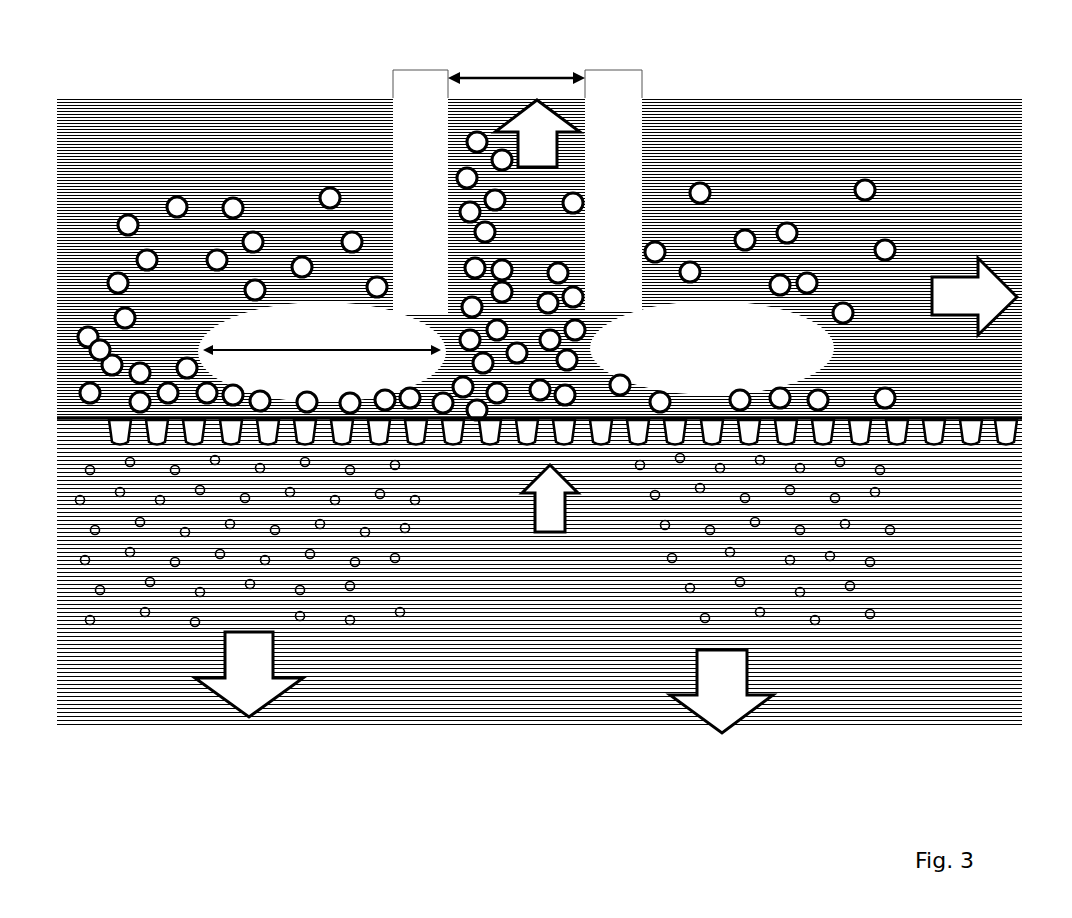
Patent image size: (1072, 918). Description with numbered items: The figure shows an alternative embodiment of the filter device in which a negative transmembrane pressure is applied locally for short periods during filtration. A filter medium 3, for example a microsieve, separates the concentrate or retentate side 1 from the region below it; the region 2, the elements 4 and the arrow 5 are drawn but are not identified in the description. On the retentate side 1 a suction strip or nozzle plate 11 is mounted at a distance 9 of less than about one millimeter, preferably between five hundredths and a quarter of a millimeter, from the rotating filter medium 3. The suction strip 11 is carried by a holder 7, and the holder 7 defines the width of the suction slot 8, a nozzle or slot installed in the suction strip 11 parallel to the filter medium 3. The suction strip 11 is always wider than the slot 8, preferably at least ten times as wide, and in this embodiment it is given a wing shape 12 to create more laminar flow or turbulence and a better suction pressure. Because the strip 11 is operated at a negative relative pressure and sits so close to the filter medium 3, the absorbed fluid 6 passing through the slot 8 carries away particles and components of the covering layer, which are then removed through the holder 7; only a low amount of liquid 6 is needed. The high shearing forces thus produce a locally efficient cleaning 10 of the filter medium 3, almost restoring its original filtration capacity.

The concentrate or retentate side 1 is at (539, 258).
The lower fluid region (permeate side) 2 is at (539, 572).
The filter medium 3 is at (537, 433).
The particles 4 is at (486, 296).
The flow direction arrow 5 is at (974, 274).
The absorbed fluid 6 is at (519, 260).
The holder 7 is at (517, 192).
The suction slot 8 is at (516, 52).
The distance 9 is at (576, 452).
The locally efficient cleaning 10 is at (741, 348).
The suction strip 11 is at (322, 352).
The wing shape 12 is at (322, 334).